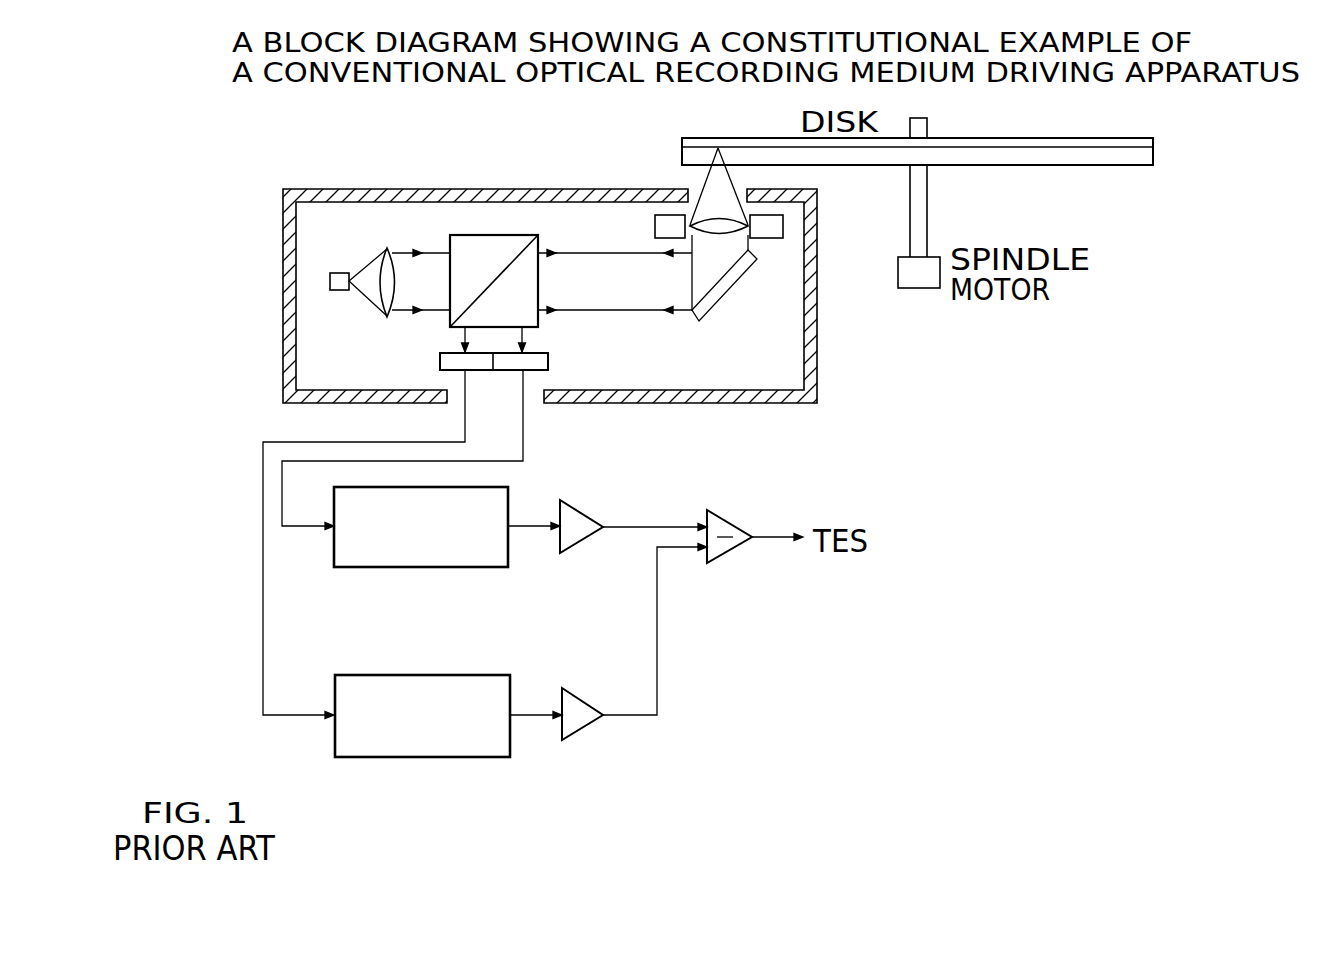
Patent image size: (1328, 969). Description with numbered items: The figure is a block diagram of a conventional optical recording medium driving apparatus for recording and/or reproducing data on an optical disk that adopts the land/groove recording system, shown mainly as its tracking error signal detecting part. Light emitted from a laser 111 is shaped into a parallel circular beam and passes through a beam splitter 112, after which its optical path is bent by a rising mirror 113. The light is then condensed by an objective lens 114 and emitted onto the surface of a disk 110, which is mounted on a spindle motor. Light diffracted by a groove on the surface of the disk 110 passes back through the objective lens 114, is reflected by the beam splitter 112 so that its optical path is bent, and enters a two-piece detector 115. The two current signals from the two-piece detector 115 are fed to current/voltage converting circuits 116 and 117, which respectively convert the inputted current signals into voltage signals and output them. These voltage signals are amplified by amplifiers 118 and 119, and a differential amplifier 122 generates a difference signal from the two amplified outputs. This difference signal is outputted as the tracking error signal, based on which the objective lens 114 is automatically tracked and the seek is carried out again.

The disk 110 is at (717, 141).
The laser 111 is at (340, 273).
The beam splitter 112 is at (472, 235).
The rising mirror 113 is at (723, 297).
The objective lens 114 is at (713, 213).
The two-piece detector 115 is at (440, 362).
The current/voltage converting circuit 116 is at (375, 570).
The current/voltage converting circuit 117 is at (378, 757).
The amplifier 118 is at (580, 543).
The amplifier 119 is at (583, 740).
The differential amplifier 122 is at (725, 518).